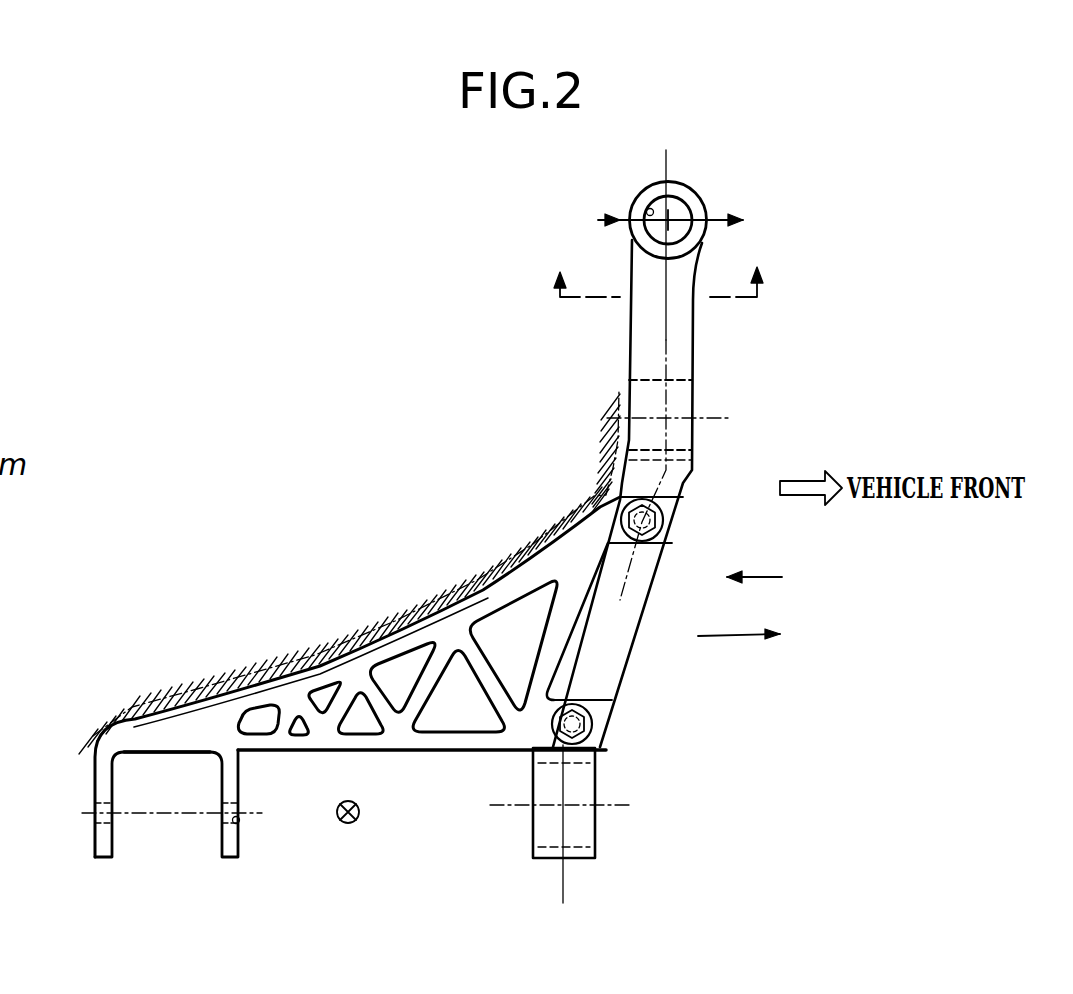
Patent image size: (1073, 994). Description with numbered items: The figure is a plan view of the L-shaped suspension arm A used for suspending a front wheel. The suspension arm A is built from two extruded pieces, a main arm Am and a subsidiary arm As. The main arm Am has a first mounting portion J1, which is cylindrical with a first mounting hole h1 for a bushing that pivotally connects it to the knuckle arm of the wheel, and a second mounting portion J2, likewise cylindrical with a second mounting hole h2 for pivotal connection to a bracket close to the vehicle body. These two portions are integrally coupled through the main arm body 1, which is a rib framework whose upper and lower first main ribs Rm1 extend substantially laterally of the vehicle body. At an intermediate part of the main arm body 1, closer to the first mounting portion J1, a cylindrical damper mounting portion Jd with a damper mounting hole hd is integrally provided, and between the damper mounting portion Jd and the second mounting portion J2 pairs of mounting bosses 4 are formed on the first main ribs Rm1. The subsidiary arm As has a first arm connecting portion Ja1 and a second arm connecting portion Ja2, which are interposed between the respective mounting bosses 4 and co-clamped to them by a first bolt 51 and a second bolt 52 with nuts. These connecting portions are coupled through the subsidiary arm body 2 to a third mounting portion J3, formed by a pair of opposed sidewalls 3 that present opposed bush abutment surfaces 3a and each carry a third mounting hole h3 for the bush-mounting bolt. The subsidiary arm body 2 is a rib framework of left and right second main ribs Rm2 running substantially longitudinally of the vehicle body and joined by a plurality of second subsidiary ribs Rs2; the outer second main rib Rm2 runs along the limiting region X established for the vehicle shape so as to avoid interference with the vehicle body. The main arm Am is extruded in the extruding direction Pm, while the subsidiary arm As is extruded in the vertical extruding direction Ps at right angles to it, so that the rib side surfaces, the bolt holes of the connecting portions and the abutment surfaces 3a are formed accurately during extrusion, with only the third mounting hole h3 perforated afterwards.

The main arm body 1 is at (633, 647).
The subsidiary arm body 2 is at (357, 677).
The sidewalls 3 is at (102, 867).
The bush abutment surfaces 3a is at (222, 836).
The mounting bosses 4 is at (659, 289).
The first bolt 51 is at (648, 542).
The second bolt 52 is at (598, 750).
The first mounting portion J1 is at (707, 187).
The second mounting portion J2 is at (600, 838).
The third mounting portion J3 is at (151, 803).
The first arm connecting portion Ja1 is at (665, 523).
The second arm connecting portion Ja2 is at (608, 721).
The damper mounting portion Jd is at (692, 440).
The first mounting hole h1 is at (647, 210).
The second mounting hole h2 is at (548, 845).
The third mounting hole h3 is at (239, 822).
The damper mounting hole hd is at (690, 384).
The damper force Fd is at (623, 224).
The first main ribs Rm1 is at (684, 315).
The second main ribs Rm2 is at (478, 610).
The second subsidiary ribs Rs2 is at (478, 668).
The suspension arm A is at (503, 372).
The main arm Am is at (628, 356).
The subsidiary arm As is at (510, 575).
The limiting region X is at (172, 688).
The extruding direction of the main arm Pm is at (735, 637).
The extruding direction of the subsidiary arm Ps is at (355, 823).